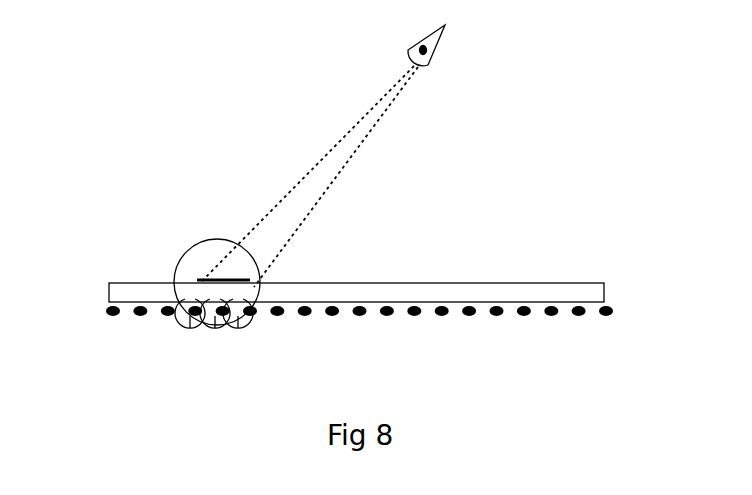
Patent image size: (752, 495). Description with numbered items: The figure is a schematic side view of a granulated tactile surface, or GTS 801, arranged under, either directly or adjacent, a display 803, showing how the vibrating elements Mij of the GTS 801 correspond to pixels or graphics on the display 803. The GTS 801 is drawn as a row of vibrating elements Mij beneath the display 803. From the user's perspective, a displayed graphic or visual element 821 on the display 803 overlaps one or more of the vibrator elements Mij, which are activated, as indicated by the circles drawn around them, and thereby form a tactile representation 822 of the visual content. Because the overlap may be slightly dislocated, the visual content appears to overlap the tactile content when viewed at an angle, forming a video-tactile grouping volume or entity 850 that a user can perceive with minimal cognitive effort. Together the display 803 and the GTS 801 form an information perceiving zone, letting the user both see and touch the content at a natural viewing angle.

The GTS 801 is at (335, 333).
The display 803 is at (108, 291).
The vibrating elements Mij is at (108, 312).
The video-tactile grouping volume 850 is at (201, 247).
The visual element 821 is at (250, 280).
The tactile representation 822 is at (238, 329).